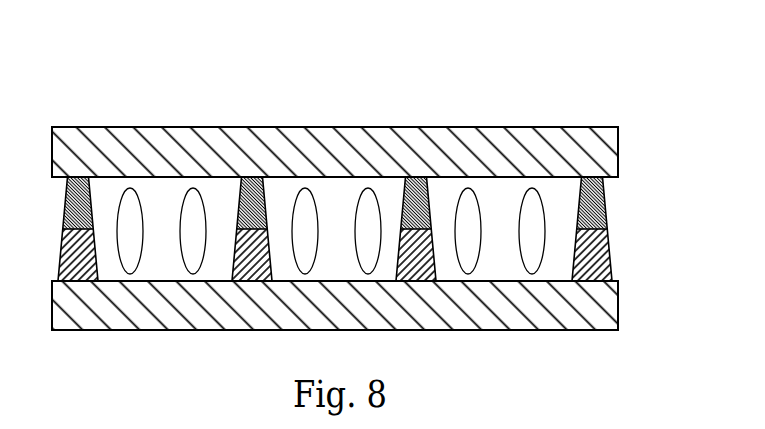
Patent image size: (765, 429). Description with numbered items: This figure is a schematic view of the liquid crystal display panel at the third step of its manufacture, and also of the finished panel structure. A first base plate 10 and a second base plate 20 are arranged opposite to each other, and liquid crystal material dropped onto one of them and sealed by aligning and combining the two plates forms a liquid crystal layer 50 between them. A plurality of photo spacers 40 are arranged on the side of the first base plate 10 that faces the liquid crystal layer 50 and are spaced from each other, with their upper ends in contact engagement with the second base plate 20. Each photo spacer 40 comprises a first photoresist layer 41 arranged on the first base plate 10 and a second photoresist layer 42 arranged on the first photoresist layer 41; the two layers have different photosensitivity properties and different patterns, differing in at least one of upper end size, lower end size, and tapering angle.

The first base plate 10 is at (619, 303).
The second base plate 20 is at (619, 152).
The photo spacer 40 is at (368, 228).
The first photoresist layer 41 is at (593, 263).
The second photoresist layer 42 is at (600, 198).
The liquid crystal layer 50 is at (127, 217).